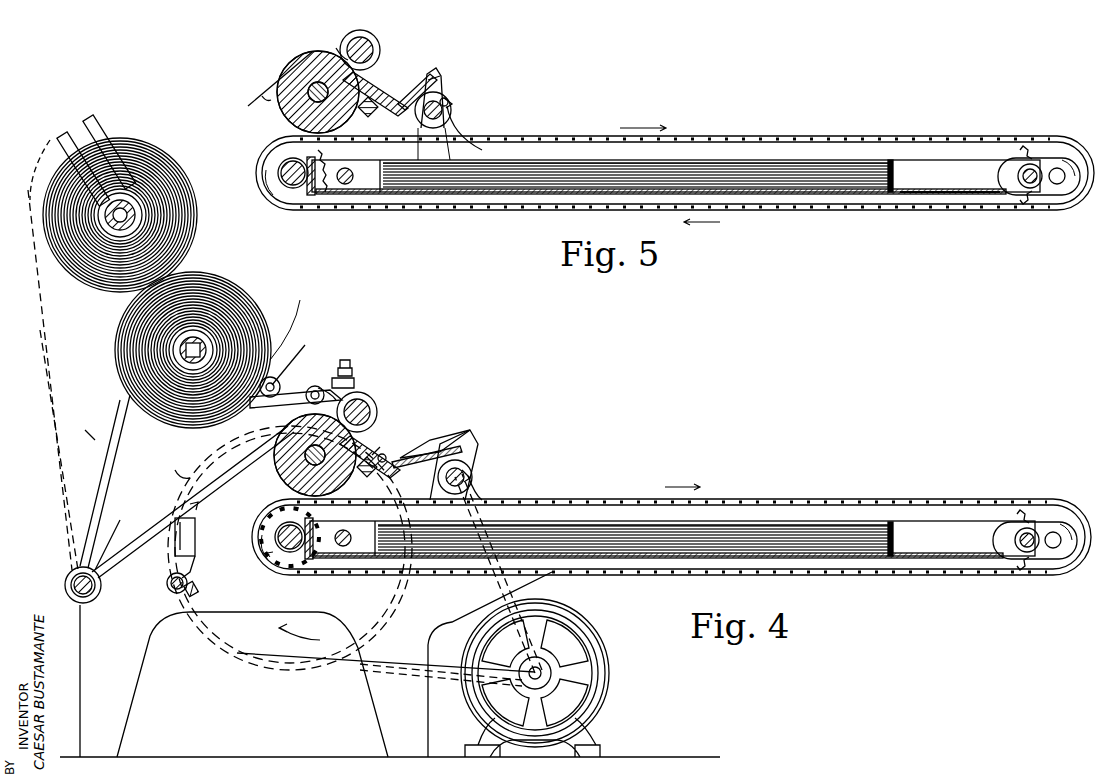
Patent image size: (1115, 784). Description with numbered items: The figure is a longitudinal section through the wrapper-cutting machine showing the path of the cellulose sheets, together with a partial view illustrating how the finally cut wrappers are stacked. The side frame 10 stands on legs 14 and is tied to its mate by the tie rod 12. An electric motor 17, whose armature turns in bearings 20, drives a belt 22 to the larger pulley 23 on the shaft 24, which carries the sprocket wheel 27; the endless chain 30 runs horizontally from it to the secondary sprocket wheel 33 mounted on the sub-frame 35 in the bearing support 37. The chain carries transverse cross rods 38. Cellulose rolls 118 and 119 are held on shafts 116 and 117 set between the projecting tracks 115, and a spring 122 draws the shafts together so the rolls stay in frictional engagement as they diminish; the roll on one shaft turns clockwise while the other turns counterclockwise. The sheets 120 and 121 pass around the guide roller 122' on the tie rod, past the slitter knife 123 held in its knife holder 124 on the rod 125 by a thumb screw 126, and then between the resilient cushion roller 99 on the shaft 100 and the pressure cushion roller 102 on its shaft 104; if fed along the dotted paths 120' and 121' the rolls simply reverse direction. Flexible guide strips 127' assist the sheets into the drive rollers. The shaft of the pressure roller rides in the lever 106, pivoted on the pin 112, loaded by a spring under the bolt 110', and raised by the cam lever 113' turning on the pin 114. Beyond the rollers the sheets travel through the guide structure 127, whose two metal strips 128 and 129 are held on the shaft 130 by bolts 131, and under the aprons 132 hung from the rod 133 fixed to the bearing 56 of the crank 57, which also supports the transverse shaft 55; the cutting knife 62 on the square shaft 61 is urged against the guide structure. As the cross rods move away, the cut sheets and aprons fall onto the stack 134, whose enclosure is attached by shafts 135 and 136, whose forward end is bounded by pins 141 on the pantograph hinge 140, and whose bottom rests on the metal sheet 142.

In FIG. 4, the side frame 10 is at (294, 321).
In FIG. 4, the tie rod 12 is at (103, 592).
In FIG. 4, the legs 14 is at (124, 712).
In FIG. 4, the electric motor 17 is at (570, 620).
In FIG. 4, the bearings 20 is at (550, 672).
In FIG. 4, the belt 22 is at (450, 680).
In FIG. 4, the pulley 23 is at (258, 636).
In FIG. 4, the shaft 24 is at (278, 533).
In FIG. 4, the sprocket wheel 27 is at (304, 560).
In FIG. 5, the endless chain 30 is at (862, 214).
In FIG. 4, the endless chain 30 is at (848, 578).
In FIG. 5, the sprocket wheel 33 is at (1062, 198).
In FIG. 4, the sprocket wheel 33 is at (1058, 562).
In FIG. 4, the sub-frame 35 is at (1032, 554).
In FIG. 4, the bearing support 37 is at (1054, 532).
In FIG. 5, the cross rods 38 is at (834, 211).
In FIG. 4, the cross rods 38 is at (610, 497).
In FIG. 5, the transversely extending shaft 55 is at (460, 118).
In FIG. 4, the transversely extending shaft 55 is at (468, 464).
In FIG. 5, the bearing 56 is at (454, 104).
In FIG. 4, the bearing 56 is at (470, 472).
In FIG. 5, the crank 57 is at (442, 92).
In FIG. 5, the square shaft 61 is at (437, 72).
In FIG. 4, the square shaft 61 is at (472, 436).
In FIG. 5, the cutting knife 62 is at (417, 84).
In FIG. 4, the cutting knife 62 is at (432, 440).
In FIG. 5, the resilient cushion roller 99 is at (285, 112).
In FIG. 4, the resilient cushion roller 99 is at (285, 472).
In FIG. 5, the shaft 100 is at (305, 62).
In FIG. 4, the shaft 100 is at (278, 438).
In FIG. 5, the pressure cushion roller 102 is at (374, 44).
In FIG. 4, the pressure cushion roller 102 is at (370, 400).
In FIG. 5, the shaft 104 is at (350, 38).
In FIG. 4, the shaft 104 is at (372, 414).
In FIG. 4, the lever 106 is at (354, 380).
In FIG. 4, the bolt 110' is at (366, 355).
In FIG. 4, the pin 112 is at (280, 385).
In FIG. 4, the cam lever 113' is at (296, 360).
In FIG. 4, the pin 114 is at (305, 357).
In FIG. 4, the projecting tracks 115 is at (72, 132).
In FIG. 4, the shaft 116 is at (132, 196).
In FIG. 4, the shaft 117 is at (175, 350).
In FIG. 4, the cellulose roll 118 is at (182, 188).
In FIG. 4, the cellulose roll 119 is at (232, 328).
In FIG. 5, the cellulose sheet 120 is at (268, 79).
In FIG. 4, the cellulose sheet 120 is at (183, 489).
In FIG. 4, the alternate sheet path 120' is at (44, 355).
In FIG. 5, the cellulose sheet 121 is at (258, 106).
In FIG. 4, the alternate sheet path 121' is at (170, 467).
In FIG. 4, the spring 122 is at (101, 429).
In FIG. 4, the guide roller 122' is at (110, 546).
In FIG. 4, the slitter knife 123 is at (197, 524).
In FIG. 4, the knife holder 124 is at (194, 570).
In FIG. 4, the rod 125 is at (170, 590).
In FIG. 4, the thumb screw 126 is at (198, 594).
In FIG. 5, the guide structure 127 is at (385, 80).
In FIG. 4, the guide structure 127 is at (382, 439).
In FIG. 5, the guide strips 127' is at (314, 35).
In FIG. 4, the metal strip 128 is at (380, 452).
In FIG. 4, the metal strip 129 is at (427, 460).
In FIG. 5, the shaft 130 is at (383, 111).
In FIG. 4, the shaft 130 is at (367, 475).
In FIG. 4, the bolts 131 is at (386, 456).
In FIG. 5, the aprons 132 is at (452, 113).
In FIG. 4, the aprons 132 is at (466, 476).
In FIG. 5, the rod 133 is at (449, 102).
In FIG. 5, the stack 134 is at (522, 193).
In FIG. 4, the stack 134 is at (720, 553).
In FIG. 5, the shaft 135 is at (1026, 190).
In FIG. 5, the shaft 136 is at (348, 186).
In FIG. 5, the pantograph hinge 140 is at (938, 197).
In FIG. 5, the pins 141 is at (894, 168).
In FIG. 4, the pins 141 is at (909, 539).
In FIG. 5, the metal sheet 142 is at (786, 196).
In FIG. 4, the metal sheet 142 is at (978, 560).